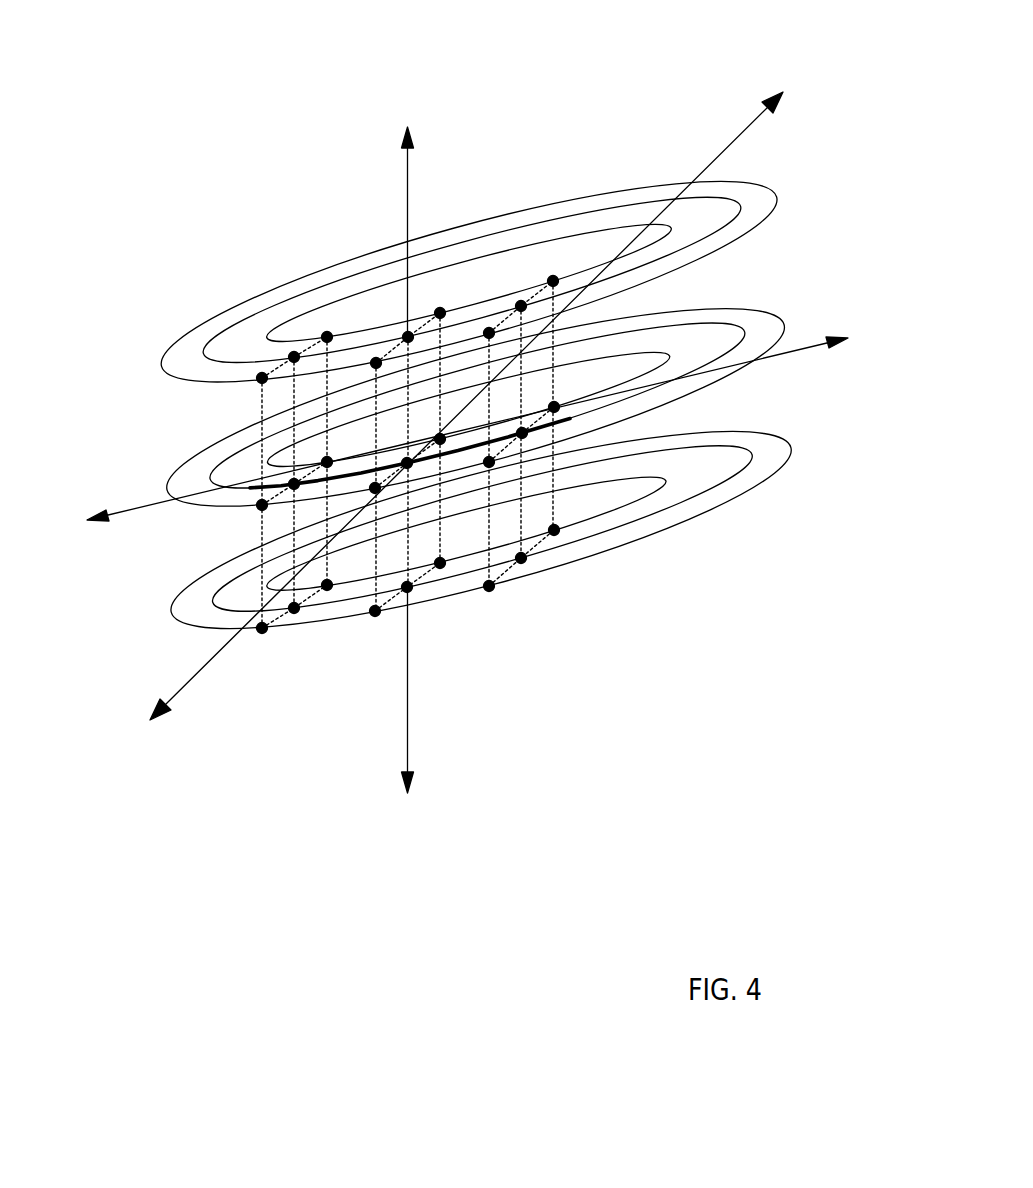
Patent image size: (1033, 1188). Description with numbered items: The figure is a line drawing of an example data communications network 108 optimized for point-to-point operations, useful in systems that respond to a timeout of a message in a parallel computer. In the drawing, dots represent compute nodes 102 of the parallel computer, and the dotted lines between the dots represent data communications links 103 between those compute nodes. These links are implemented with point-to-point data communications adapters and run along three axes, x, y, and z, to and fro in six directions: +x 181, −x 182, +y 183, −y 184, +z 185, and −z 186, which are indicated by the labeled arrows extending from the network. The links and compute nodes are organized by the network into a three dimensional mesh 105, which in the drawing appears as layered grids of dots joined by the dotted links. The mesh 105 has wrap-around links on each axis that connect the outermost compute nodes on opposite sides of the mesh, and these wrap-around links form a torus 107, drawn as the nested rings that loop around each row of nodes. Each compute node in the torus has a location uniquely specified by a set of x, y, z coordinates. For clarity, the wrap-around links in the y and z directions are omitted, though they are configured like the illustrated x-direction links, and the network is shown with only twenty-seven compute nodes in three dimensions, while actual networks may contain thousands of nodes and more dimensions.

The compute nodes 102 is at (489, 589).
The data communications links 103 is at (262, 532).
The three dimensional mesh 105 is at (553, 279).
The torus 107 is at (248, 292).
The data communications network 108 is at (463, 583).
The +x direction 181 is at (885, 366).
The −x direction 182 is at (82, 561).
The +y direction 183 is at (827, 117).
The −y direction 184 is at (145, 769).
The +z direction 185 is at (423, 117).
The −z direction 186 is at (425, 859).